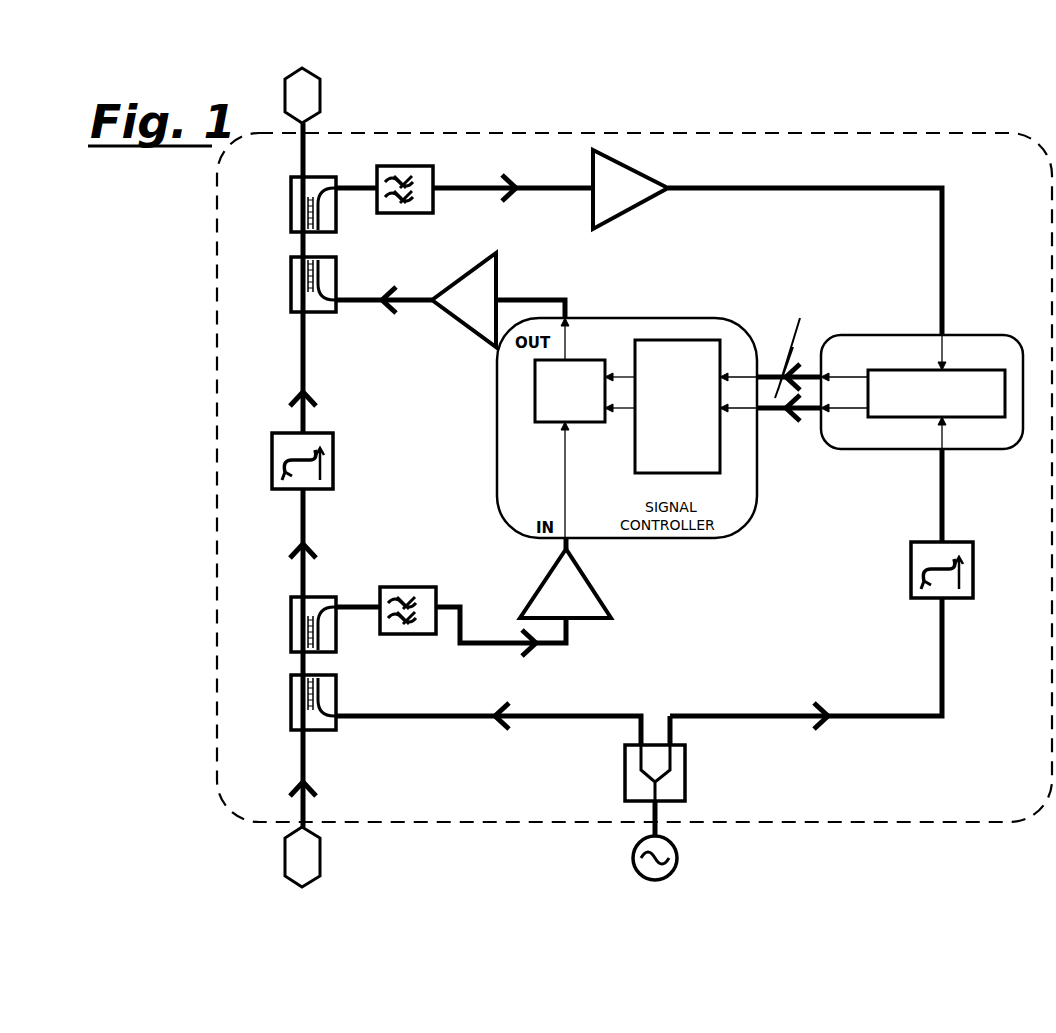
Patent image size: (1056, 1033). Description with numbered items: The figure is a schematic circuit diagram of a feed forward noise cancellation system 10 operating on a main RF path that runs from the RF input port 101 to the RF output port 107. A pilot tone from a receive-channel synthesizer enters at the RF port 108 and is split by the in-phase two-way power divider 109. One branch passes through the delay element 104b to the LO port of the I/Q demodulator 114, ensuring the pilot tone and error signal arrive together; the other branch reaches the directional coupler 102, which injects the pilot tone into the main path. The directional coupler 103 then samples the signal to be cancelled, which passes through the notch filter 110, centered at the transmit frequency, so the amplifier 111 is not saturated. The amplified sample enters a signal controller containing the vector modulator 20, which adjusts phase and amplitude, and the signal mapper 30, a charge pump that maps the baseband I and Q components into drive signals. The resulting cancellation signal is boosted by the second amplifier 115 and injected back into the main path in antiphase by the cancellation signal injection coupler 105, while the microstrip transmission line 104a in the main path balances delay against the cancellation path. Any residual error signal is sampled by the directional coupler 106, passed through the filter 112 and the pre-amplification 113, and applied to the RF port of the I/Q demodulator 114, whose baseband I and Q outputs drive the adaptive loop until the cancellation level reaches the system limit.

The feed forward noise cancellation system 10 is at (634, 477).
The vector modulator 20 is at (581, 428).
The signal mapper 30 is at (681, 407).
The RF input port 101 is at (359, 857).
The directional coupler 102 is at (339, 702).
The directional coupler 103 is at (311, 605).
The microstrip transmission line 104a is at (300, 461).
The delay element 104b is at (846, 589).
The cancellation signal injection coupler 105 is at (343, 284).
The directional coupler 106 is at (296, 204).
The RF output port 107 is at (459, 95).
The RF port 108 is at (786, 840).
The in-phase 2-way power divider 109 is at (510, 752).
The notch filter 110 is at (451, 609).
The amplifier 111 is at (584, 578).
The filter 112 is at (464, 177).
The pre-amplification 113 is at (767, 242).
The I/Q demodulator 114 is at (878, 370).
The second amplifier 115 is at (450, 300).